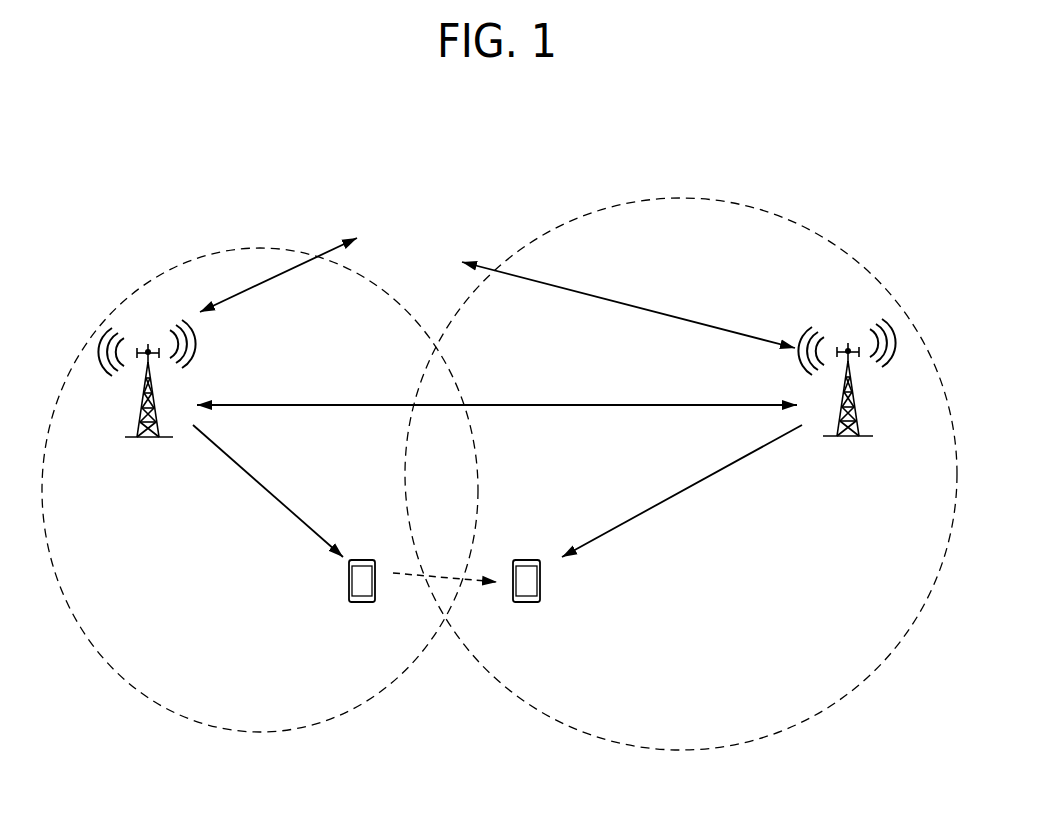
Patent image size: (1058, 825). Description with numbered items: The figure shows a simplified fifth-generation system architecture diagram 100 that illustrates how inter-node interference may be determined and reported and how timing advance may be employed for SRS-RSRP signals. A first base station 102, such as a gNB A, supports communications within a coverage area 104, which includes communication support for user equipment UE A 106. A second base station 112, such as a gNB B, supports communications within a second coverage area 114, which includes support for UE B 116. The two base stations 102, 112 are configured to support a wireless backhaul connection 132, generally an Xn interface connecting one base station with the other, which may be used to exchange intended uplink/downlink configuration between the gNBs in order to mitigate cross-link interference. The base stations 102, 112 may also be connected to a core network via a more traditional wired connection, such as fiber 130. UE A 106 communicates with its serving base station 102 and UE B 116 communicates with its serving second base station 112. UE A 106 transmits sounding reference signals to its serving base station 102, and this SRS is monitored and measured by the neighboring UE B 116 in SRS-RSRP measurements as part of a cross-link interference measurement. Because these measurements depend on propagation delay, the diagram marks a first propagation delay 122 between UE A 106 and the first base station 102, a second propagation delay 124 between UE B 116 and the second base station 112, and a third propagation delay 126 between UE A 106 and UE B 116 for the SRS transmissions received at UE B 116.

The 5G system architecture diagram 100 is at (126, 168).
The first base station 102 is at (170, 370).
The coverage area 104 is at (250, 248).
The user equipment UE A 106 is at (348, 581).
The second base station 112 is at (810, 366).
The second coverage area 114 is at (677, 198).
The UE B 116 is at (541, 582).
The first propagation delay T1 122 is at (263, 487).
The second propagation delay T2 124 is at (694, 486).
The third propagation delay T3 126 is at (444, 578).
The fiber 130 is at (468, 254).
The wireless backhaul connection 132 is at (522, 405).